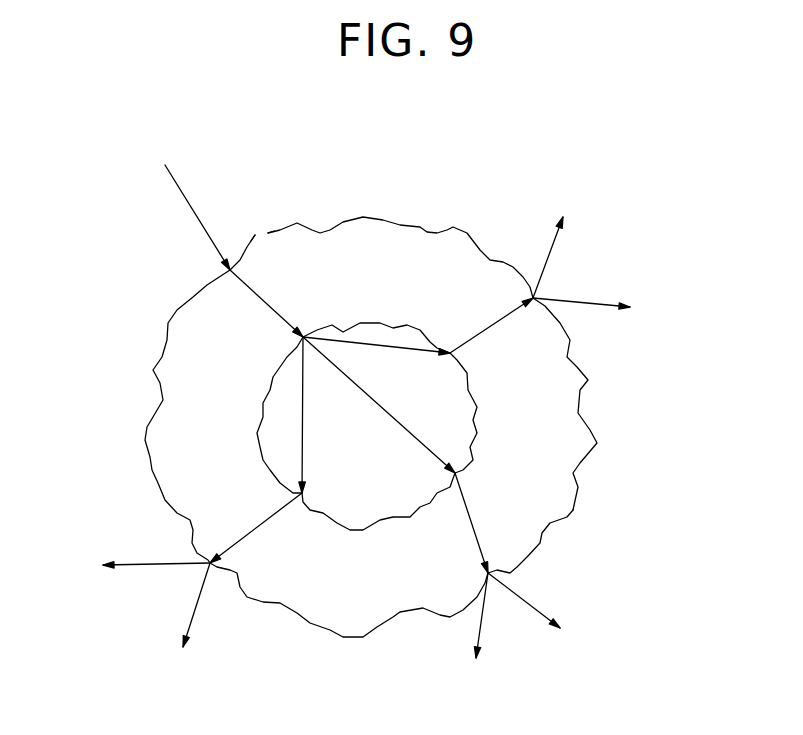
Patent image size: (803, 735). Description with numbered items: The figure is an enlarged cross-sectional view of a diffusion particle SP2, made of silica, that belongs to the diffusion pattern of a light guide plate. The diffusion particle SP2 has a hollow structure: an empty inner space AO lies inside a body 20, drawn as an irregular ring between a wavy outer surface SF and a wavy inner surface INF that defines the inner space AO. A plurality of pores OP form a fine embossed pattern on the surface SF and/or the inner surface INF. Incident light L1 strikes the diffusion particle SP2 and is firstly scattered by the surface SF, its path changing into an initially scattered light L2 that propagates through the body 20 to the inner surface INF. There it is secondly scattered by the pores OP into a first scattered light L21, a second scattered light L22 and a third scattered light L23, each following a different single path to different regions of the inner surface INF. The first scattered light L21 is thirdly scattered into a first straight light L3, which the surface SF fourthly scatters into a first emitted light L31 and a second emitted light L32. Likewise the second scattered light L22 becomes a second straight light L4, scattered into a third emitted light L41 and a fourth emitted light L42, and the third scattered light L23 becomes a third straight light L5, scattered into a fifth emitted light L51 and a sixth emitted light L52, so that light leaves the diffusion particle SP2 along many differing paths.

The diffusion particle SP2 is at (258, 163).
The body 20 is at (452, 235).
The pores OP is at (320, 233).
The surface SF is at (598, 395).
The inner surface INF is at (490, 447).
The inner space AO is at (358, 502).
The incident light L1 is at (191, 207).
The initially scattered light L2 is at (266, 303).
The first scattered light L21 is at (376, 359).
The second scattered light L22 is at (379, 405).
The third scattered light L23 is at (318, 415).
The first straight light L3 is at (491, 330).
The first emitted light L31 is at (555, 244).
The second emitted light L32 is at (603, 311).
The second straight light L4 is at (479, 523).
The third emitted light L41 is at (542, 609).
The fourth emitted light L42 is at (465, 632).
The third straight light L5 is at (256, 528).
The fifth emitted light L51 is at (187, 621).
The sixth emitted light L52 is at (135, 566).